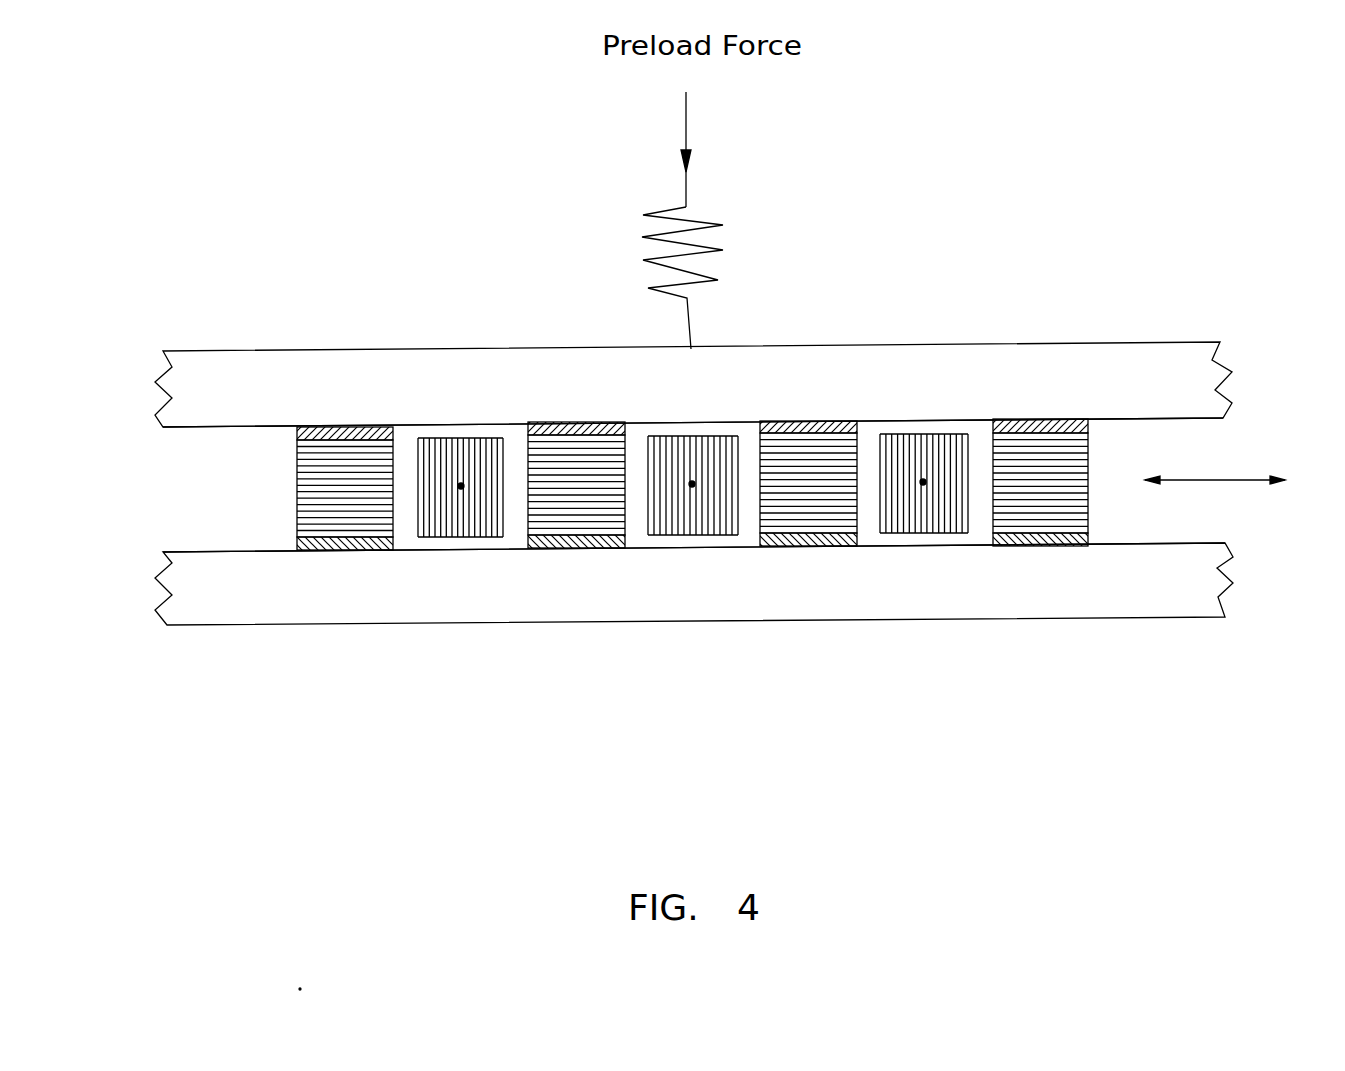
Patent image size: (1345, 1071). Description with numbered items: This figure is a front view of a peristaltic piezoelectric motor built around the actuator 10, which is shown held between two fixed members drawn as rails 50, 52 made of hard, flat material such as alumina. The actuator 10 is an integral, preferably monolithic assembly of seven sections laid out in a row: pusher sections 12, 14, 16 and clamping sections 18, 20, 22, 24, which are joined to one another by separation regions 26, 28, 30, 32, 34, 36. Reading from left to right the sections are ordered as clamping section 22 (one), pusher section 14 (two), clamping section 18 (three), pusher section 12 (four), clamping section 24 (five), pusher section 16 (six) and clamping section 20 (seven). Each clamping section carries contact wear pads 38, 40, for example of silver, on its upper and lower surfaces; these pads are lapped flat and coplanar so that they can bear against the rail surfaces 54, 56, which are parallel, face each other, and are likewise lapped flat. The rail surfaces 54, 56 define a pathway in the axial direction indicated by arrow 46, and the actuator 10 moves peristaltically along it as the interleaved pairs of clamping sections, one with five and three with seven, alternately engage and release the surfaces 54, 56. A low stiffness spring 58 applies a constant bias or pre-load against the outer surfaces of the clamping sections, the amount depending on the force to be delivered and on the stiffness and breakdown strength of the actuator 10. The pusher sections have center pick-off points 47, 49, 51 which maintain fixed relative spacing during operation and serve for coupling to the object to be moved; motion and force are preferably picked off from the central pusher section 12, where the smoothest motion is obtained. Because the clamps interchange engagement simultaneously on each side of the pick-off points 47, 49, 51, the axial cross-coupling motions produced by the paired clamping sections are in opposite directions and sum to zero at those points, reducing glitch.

The actuator 10 is at (297, 513).
The pusher section 12 is at (663, 525).
The pusher section 14 is at (435, 458).
The pusher section 16 is at (912, 462).
The clamping section 18 is at (577, 458).
The clamping section 20 is at (1067, 507).
The clamping section 22 is at (325, 497).
The clamping section 24 is at (818, 512).
The separation region 26 is at (407, 517).
The separation region 28 is at (517, 447).
The separation region 30 is at (638, 523).
The separation region 32 is at (747, 450).
The separation region 34 is at (867, 522).
The separation region 36 is at (978, 443).
The contact wear pad 38 is at (320, 425).
The contact wear pad 40 is at (372, 550).
The arrow 46 is at (1215, 478).
The pick-off point 47 is at (692, 484).
The pick-off point 49 is at (923, 482).
The rail 50 is at (1178, 378).
The pick-off point 51 is at (461, 486).
The rail 52 is at (1173, 585).
The rail surface 54 is at (202, 427).
The rail surface 56 is at (220, 550).
The low stiffness spring 58 is at (665, 208).